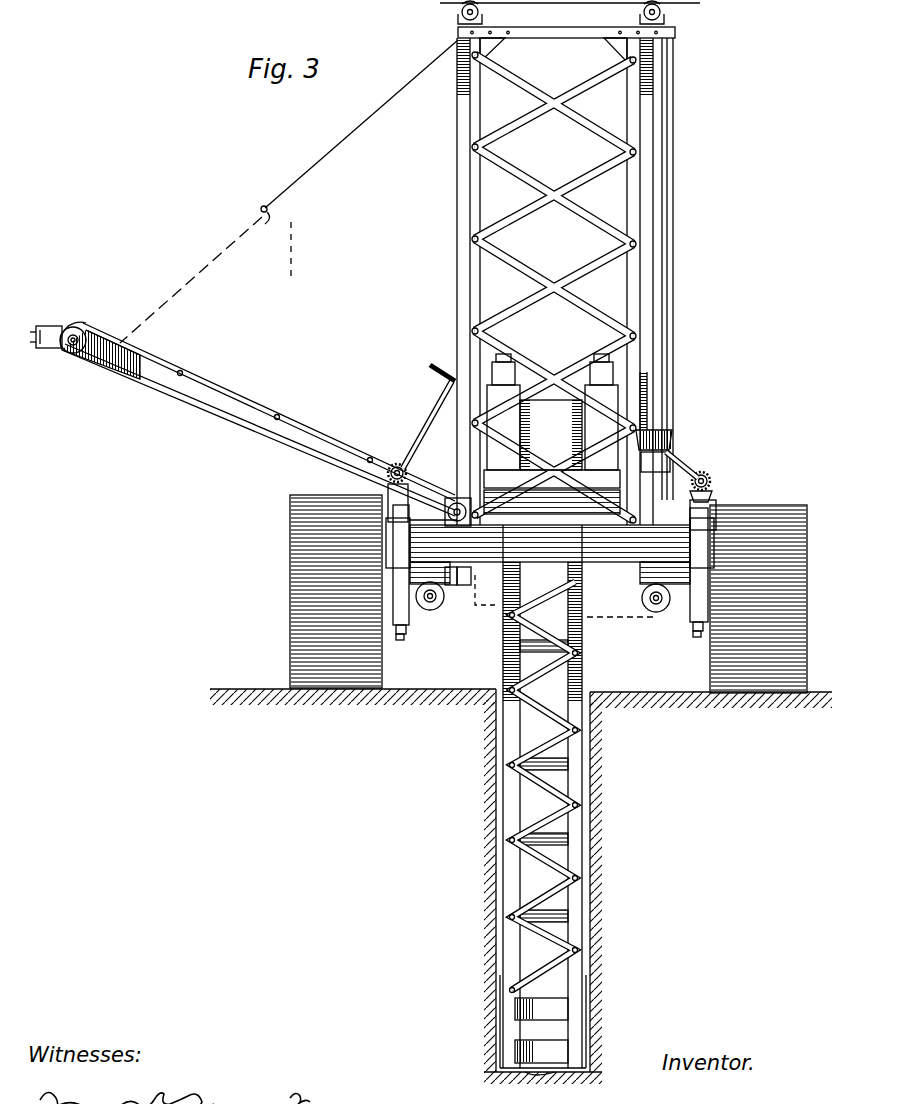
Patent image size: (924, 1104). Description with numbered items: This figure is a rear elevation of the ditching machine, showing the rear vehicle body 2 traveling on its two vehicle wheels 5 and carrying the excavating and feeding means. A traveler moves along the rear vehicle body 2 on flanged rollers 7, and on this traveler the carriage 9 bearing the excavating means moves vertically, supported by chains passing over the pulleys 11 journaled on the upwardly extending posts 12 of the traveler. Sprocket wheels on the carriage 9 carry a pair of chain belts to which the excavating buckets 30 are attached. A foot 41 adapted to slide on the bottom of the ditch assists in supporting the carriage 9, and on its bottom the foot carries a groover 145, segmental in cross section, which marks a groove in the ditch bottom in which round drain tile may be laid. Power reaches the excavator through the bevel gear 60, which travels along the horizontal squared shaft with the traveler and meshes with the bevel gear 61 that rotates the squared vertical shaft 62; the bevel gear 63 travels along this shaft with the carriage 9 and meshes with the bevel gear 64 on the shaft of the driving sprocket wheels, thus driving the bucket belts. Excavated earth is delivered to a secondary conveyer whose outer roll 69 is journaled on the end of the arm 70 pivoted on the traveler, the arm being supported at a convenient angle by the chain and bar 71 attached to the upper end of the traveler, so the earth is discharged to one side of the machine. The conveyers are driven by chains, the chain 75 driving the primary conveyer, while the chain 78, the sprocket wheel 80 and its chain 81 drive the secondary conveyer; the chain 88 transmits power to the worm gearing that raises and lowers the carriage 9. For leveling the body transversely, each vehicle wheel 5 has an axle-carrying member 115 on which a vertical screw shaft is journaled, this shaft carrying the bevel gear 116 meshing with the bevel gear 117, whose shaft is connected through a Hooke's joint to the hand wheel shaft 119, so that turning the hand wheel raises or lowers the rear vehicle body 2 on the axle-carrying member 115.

The rear vehicle body 2 is at (400, 592).
The vehicle wheels 5 is at (548, 594).
The flanged rollers 7 is at (407, 513).
The carriage 9 is at (574, 760).
The pulleys 11 is at (460, 10).
The upwardly extending posts 12 is at (457, 165).
The excavating buckets 30 is at (578, 926).
The foot 41 is at (584, 1022).
The bevel gear 60 is at (662, 610).
The bevel gear 61 is at (643, 580).
The squared vertical shaft 62 is at (668, 286).
The bevel gear 63 is at (676, 441).
The bevel gear 64 is at (649, 384).
The roll 69 is at (97, 312).
The arm 70 is at (228, 411).
The chain and bar 71 is at (266, 226).
The chain 75 is at (640, 596).
The chain 78 is at (478, 607).
The sprocket wheel 80 is at (448, 607).
The chain 81 is at (428, 582).
The chain 88 is at (489, 592).
The axle-carrying member 115 is at (396, 628).
The bevel gear 116 is at (715, 493).
The bevel gear 117 is at (712, 478).
The hand wheel shaft 119 is at (428, 445).
The groover 145 is at (543, 1086).